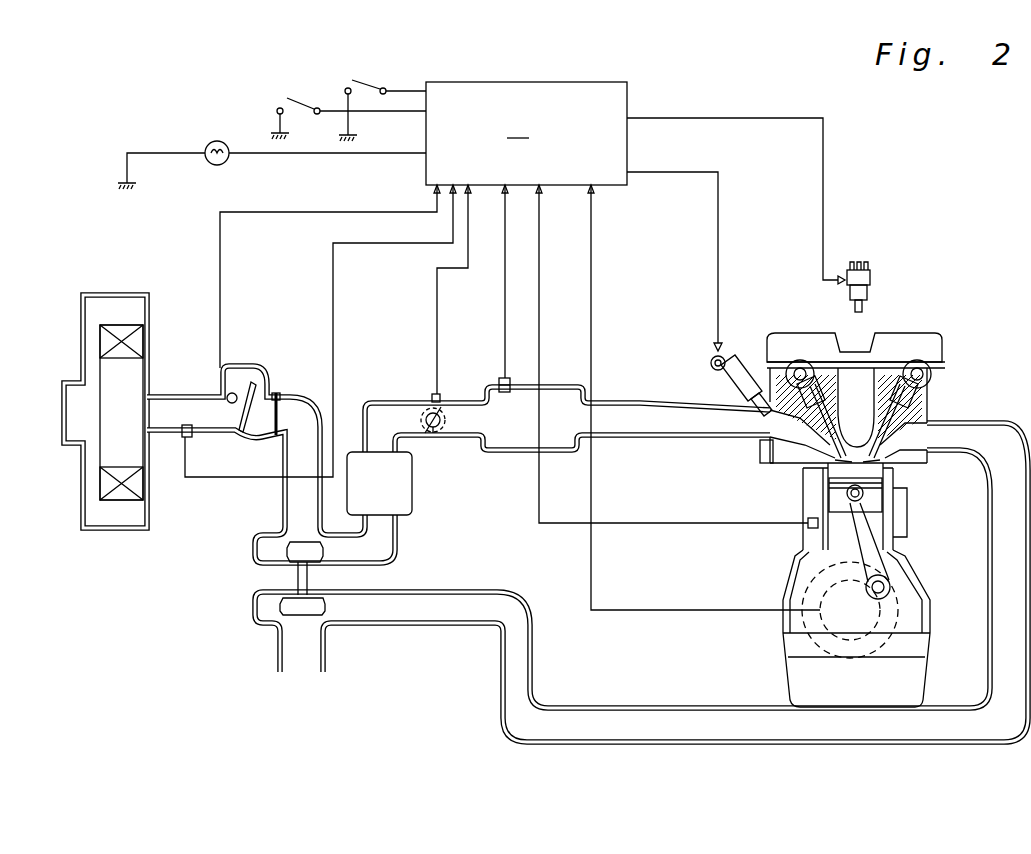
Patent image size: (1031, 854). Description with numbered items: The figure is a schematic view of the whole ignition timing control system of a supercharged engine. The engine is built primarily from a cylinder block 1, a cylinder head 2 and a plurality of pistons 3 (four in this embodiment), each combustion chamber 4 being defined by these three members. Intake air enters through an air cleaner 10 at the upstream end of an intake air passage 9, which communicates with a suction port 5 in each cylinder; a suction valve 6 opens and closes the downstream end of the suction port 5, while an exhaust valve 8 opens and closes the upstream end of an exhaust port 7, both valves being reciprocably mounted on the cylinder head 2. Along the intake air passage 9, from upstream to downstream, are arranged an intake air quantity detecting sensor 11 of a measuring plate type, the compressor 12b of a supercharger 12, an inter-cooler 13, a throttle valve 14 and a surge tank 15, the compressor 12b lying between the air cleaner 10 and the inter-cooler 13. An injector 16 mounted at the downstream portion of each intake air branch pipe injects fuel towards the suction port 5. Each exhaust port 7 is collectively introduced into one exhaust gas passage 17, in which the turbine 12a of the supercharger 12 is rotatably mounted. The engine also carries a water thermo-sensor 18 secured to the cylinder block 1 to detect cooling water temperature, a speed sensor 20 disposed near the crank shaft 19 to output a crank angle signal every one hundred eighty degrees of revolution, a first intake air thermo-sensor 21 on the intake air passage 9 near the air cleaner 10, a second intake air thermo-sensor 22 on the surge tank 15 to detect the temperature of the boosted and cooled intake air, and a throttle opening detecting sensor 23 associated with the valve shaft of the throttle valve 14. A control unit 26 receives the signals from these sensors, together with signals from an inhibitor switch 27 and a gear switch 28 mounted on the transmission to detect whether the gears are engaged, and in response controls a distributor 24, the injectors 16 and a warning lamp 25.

The cylinder block 1 is at (897, 515).
The cylinder head 2 is at (925, 404).
The piston 3 is at (875, 493).
The combustion chamber 4 is at (855, 446).
The suction port 5 is at (840, 468).
The suction valve 6 is at (823, 498).
The exhaust port 7 is at (930, 443).
The exhaust valve 8 is at (893, 473).
The intake air passage 9 is at (628, 437).
The air cleaner 10 is at (80, 480).
The intake air quantity detecting sensor 11 is at (235, 428).
The supercharger 12 is at (237, 588).
The turbine 12a is at (258, 607).
The compressor 12b is at (258, 560).
The inter-cooler 13 is at (413, 487).
The throttle valve 14 is at (437, 432).
The surge tank 15 is at (513, 448).
The injector 16 is at (748, 412).
The exhaust gas passage 17 is at (380, 626).
The water thermo-sensor 18 is at (808, 526).
The crank shaft 19 is at (868, 640).
The speed sensor 20 is at (818, 640).
The first intake air thermo-sensor 21 is at (183, 445).
The second intake air thermo-sensor 22 is at (495, 387).
The throttle opening detecting sensor 23 is at (433, 396).
The distributor 24 is at (870, 290).
The warning lamp 25 is at (216, 141).
The control unit 26 is at (515, 346).
The inhibitor switch 27 is at (368, 88).
The gear switch 28 is at (300, 103).